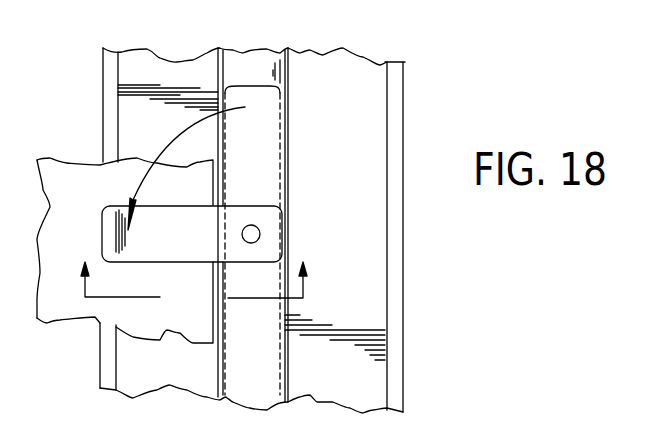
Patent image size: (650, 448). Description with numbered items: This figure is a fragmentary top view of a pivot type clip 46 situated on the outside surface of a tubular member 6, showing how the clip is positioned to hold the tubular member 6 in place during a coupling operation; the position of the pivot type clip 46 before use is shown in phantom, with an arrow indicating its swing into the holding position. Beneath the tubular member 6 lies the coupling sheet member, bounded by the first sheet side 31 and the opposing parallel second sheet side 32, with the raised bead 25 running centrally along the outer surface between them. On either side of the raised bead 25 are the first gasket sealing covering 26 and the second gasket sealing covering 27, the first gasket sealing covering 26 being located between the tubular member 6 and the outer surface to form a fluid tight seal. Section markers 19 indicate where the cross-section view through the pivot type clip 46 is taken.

The tubular member 6 is at (80, 183).
The cross-section view line 19 is at (202, 263).
The raised bead 25 is at (243, 65).
The first gasket sealing covering 26 is at (340, 90).
The second gasket sealing covering 27 is at (142, 70).
The first sheet side 31 is at (102, 88).
The second sheet side 32 is at (405, 93).
The pivot type clip 46 is at (190, 247).